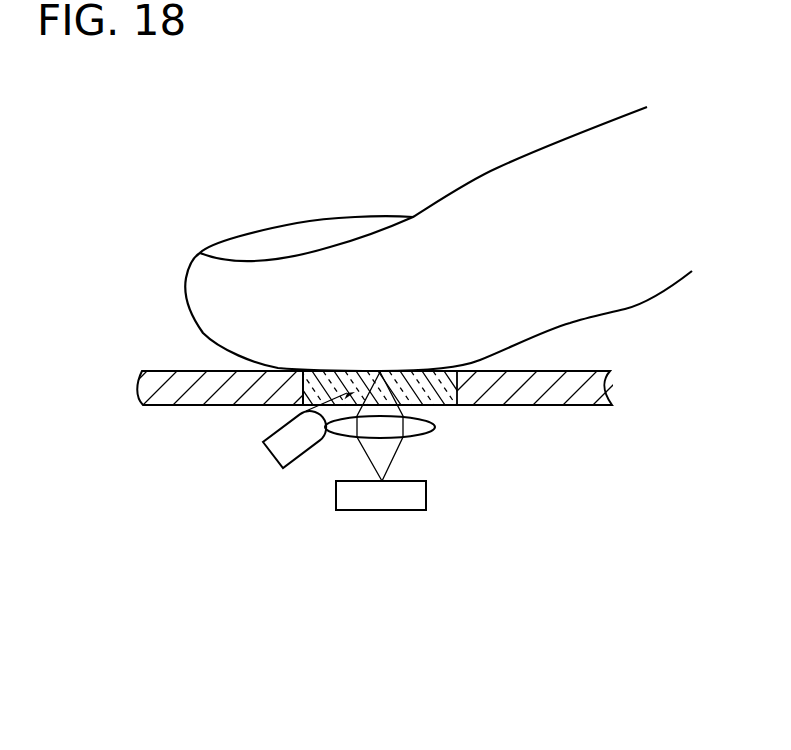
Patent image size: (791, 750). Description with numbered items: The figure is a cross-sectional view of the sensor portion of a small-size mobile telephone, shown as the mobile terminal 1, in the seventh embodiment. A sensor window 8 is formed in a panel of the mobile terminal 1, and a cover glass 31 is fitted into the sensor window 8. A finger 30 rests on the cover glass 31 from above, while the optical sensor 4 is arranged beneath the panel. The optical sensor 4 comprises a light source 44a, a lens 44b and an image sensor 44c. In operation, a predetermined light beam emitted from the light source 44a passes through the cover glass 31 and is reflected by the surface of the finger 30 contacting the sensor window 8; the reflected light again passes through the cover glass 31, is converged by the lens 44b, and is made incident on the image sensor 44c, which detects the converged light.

The finger 30 is at (448, 282).
The mobile terminal 1 is at (190, 390).
The sensor window 8 is at (303, 396).
The cover glass 31 is at (440, 388).
The optical sensor 4 is at (373, 498).
The light source 44a is at (292, 442).
The lens 44b is at (418, 427).
The image sensor 44c is at (381, 527).